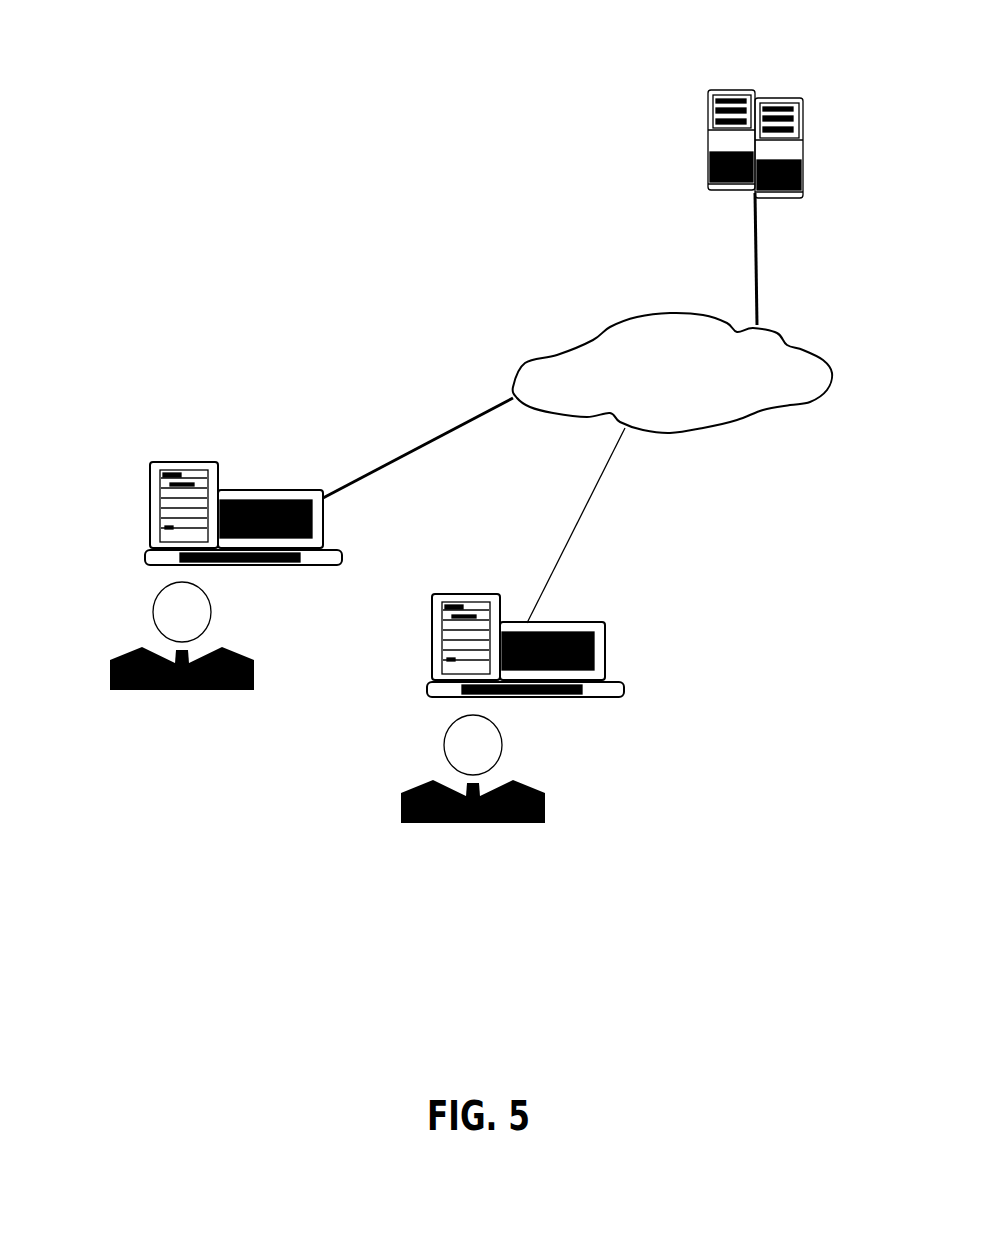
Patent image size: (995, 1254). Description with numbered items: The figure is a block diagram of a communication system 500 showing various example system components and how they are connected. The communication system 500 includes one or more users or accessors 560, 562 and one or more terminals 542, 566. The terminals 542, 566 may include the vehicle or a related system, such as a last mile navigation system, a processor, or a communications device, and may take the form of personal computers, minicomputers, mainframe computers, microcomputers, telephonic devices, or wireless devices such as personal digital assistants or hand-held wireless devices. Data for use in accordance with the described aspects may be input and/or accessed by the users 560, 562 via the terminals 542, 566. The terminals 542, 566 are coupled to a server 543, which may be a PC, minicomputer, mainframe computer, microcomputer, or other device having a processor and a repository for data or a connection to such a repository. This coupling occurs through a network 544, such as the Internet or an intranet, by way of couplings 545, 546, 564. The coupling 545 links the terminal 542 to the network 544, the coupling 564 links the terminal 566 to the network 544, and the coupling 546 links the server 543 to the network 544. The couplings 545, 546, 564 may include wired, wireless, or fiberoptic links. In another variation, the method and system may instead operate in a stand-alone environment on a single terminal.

The communication system 500 is at (196, 46).
The terminal 542 is at (183, 462).
The server 543 is at (733, 90).
The network 544 is at (608, 328).
The coupling 545 is at (368, 472).
The coupling 546 is at (757, 263).
The user 560 is at (145, 647).
The user 562 is at (522, 785).
The coupling 564 is at (598, 487).
The terminal 566 is at (603, 623).